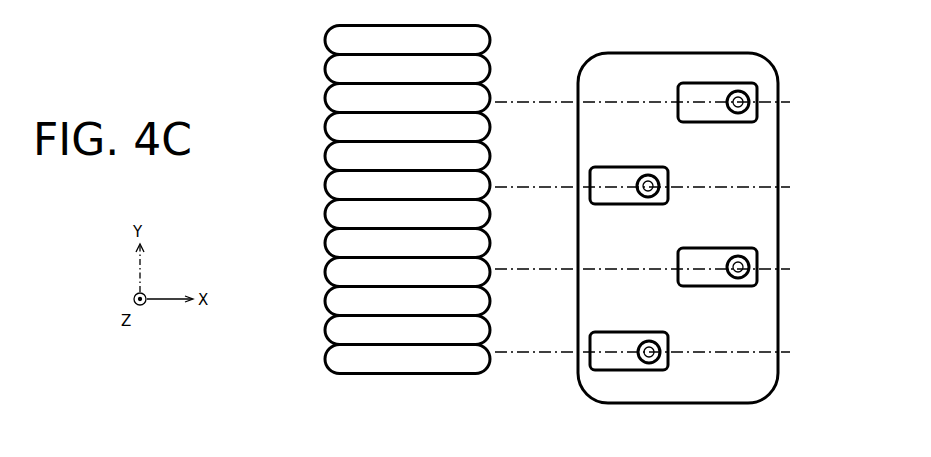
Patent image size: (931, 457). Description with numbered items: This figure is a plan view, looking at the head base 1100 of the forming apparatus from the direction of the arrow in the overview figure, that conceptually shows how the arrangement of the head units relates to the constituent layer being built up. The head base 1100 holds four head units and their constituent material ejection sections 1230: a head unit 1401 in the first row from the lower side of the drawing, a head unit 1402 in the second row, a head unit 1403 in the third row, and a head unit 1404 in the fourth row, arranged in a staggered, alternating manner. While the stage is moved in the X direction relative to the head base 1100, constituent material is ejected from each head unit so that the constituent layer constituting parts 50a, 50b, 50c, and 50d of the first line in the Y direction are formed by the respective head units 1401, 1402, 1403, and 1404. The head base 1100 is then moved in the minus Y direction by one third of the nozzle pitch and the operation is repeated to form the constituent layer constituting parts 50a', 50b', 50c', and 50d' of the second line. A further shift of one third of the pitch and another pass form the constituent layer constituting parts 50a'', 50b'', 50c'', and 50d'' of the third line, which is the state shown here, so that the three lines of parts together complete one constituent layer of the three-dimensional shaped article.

The constituent layer constituting part 50d is at (373, 40).
The constituent layer constituting part 50d' is at (373, 69).
The constituent layer constituting part 50d'' is at (439, 115).
The constituent layer constituting part 50c is at (373, 127).
The constituent layer constituting part 50c' is at (373, 156).
The constituent layer constituting part 50c'' is at (438, 199).
The constituent layer constituting part 50b is at (373, 214).
The constituent layer constituting part 50b' is at (373, 242).
The constituent layer constituting part 50b'' is at (440, 283).
The constituent layer constituting part 50a is at (373, 299).
The constituent layer constituting part 50a' is at (373, 328).
The constituent layer constituting part 50a'' is at (440, 371).
The head base 1100 is at (767, 62).
The constituent material ejection section 1230 is at (740, 90).
The head unit 1401 is at (668, 365).
The head unit 1402 is at (757, 280).
The head unit 1403 is at (668, 197).
The head unit 1404 is at (757, 115).